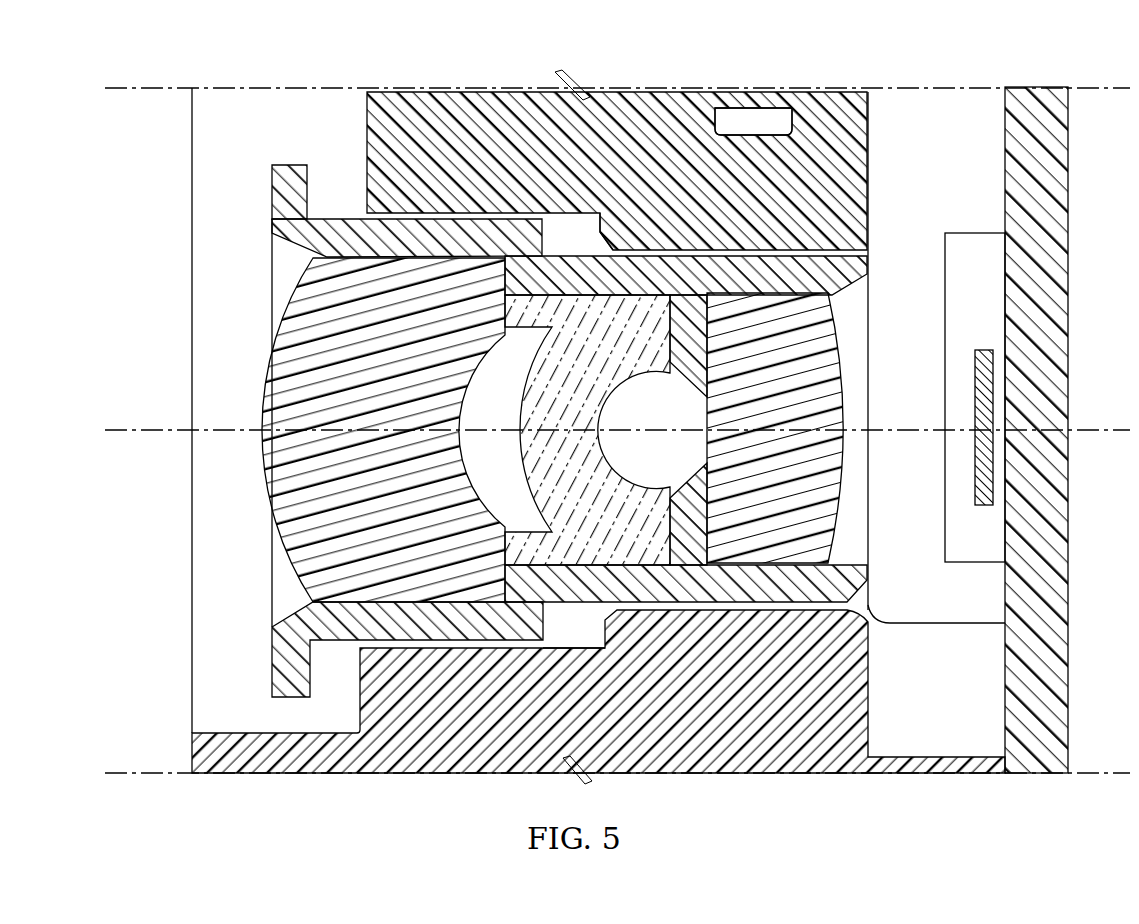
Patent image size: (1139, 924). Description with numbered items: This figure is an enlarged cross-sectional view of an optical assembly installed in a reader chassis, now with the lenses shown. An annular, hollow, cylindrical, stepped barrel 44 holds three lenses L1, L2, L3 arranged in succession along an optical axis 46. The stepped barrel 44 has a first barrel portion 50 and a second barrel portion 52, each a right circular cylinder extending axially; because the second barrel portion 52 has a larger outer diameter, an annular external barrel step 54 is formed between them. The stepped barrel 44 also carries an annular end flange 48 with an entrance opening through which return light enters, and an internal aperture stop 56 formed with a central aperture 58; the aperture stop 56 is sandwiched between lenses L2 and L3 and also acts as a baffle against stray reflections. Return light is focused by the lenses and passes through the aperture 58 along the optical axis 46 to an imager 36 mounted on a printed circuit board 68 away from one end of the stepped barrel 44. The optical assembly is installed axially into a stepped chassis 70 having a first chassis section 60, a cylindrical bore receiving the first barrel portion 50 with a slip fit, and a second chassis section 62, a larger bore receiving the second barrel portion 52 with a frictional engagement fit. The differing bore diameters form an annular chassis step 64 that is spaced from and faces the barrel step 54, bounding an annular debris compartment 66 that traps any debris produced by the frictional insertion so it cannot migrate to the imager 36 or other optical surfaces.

The imager 36 is at (975, 405).
The stepped barrel 44 is at (262, 657).
The optical axis 46 is at (1112, 428).
The end flange 48 is at (290, 165).
The first barrel portion 50 is at (695, 245).
The second barrel portion 52 is at (347, 219).
The barrel step 54 is at (545, 242).
The aperture stop 56 is at (692, 368).
The aperture 58 is at (702, 396).
The first chassis section 60 is at (869, 586).
The second chassis section 62 is at (570, 700).
The chassis step 64 is at (600, 230).
The debris compartment 66 is at (583, 205).
The printed circuit board 68 is at (1042, 90).
The stepped chassis 70 is at (450, 90).
The lens L1 is at (385, 565).
The lens L2 is at (585, 565).
The lens L3 is at (770, 565).